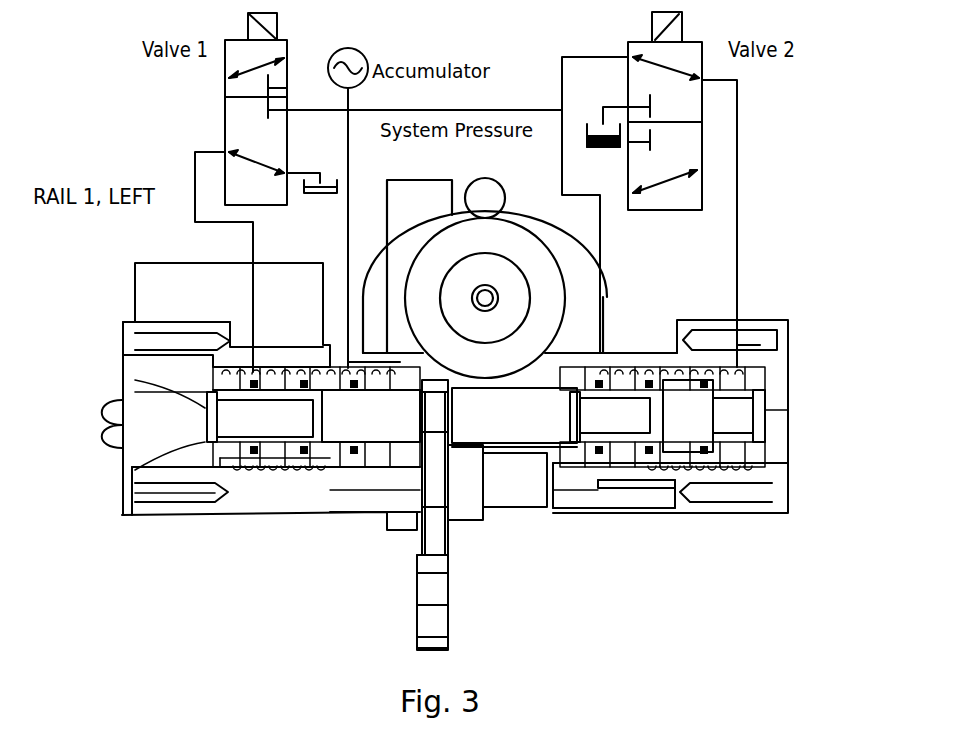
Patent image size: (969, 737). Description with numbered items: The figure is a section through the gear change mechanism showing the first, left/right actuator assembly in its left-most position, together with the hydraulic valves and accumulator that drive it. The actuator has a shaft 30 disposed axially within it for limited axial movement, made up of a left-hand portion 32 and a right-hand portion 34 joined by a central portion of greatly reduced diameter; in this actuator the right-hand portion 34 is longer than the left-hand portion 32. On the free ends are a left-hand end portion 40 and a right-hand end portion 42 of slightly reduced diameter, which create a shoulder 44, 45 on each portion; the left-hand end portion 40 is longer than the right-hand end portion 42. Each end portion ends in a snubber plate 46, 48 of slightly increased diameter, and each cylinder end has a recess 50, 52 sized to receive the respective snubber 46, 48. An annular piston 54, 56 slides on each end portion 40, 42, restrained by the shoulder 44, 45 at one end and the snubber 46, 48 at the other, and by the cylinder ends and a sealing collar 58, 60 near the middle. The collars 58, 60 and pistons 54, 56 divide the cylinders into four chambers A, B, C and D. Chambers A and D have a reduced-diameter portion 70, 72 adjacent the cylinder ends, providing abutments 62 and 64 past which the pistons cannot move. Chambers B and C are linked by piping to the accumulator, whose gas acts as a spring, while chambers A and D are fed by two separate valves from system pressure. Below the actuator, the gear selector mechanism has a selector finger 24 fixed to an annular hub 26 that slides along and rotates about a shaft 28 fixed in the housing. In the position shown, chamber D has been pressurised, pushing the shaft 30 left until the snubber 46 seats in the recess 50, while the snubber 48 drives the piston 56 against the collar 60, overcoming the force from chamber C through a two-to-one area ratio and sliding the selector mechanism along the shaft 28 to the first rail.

The selector finger 24 is at (437, 622).
The hub portion 26 is at (465, 513).
The shaft 28 is at (505, 507).
The shaft 30 is at (292, 512).
The left-hand portion of the shaft 32 is at (335, 382).
The right-hand portion of the shaft 34 is at (530, 427).
The left-hand end portion 40 is at (168, 502).
The right-hand end portion 42 is at (602, 465).
The shoulder 44 is at (300, 372).
The shoulder 45 is at (607, 362).
The snubber plate 46 is at (203, 447).
The snubber plate 48 is at (673, 467).
The recess 50 is at (207, 420).
The recess 52 is at (773, 430).
The annular piston 54 is at (232, 512).
The annular piston 56 is at (628, 463).
The sealing collar 58 is at (400, 365).
The sealing collar 60 is at (573, 367).
The abutment 62 is at (265, 368).
The abutment 64 is at (713, 372).
The reduced-diameter portion 70 is at (235, 368).
The reduced-diameter portion 72 is at (748, 375).
The chamber A is at (210, 405).
The chamber B is at (380, 468).
The chamber C is at (580, 468).
The chamber D is at (735, 410).